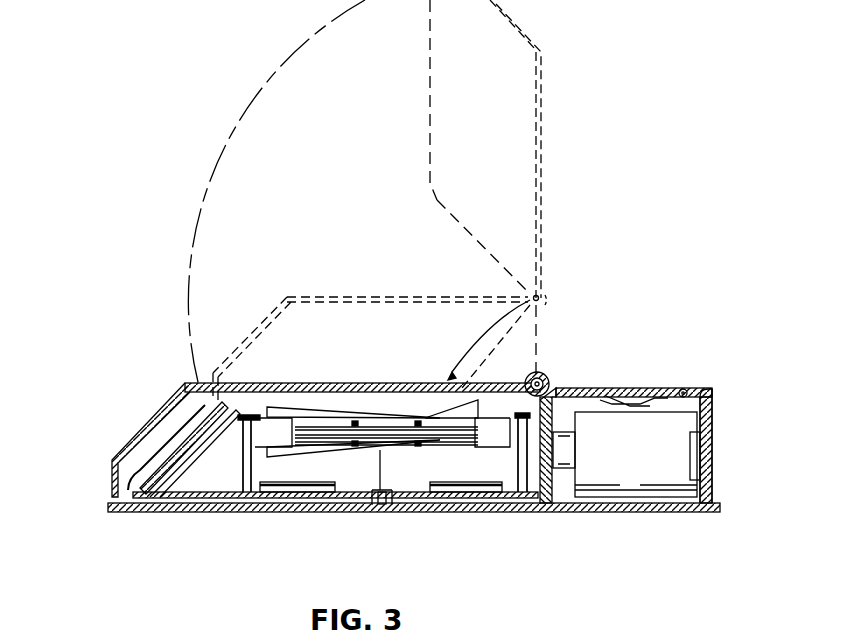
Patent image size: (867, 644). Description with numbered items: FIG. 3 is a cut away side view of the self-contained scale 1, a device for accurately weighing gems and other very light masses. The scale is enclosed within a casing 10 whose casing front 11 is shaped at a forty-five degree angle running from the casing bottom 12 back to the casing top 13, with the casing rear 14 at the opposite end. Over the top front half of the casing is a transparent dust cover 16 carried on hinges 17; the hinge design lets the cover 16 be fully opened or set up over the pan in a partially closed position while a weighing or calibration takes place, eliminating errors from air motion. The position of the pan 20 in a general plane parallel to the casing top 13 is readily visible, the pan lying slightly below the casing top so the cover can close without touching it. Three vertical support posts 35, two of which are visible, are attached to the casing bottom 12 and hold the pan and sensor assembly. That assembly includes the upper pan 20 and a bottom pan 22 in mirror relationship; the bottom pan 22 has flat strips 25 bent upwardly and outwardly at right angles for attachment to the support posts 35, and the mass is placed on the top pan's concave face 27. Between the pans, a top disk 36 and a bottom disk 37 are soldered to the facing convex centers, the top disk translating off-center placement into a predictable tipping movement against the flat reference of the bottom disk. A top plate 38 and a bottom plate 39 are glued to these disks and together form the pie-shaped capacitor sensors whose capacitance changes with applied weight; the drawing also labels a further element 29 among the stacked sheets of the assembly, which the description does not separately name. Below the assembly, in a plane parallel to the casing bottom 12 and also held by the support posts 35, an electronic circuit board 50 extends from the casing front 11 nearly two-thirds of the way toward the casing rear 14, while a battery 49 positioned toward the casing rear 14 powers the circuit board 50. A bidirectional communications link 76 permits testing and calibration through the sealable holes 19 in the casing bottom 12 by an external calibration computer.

The self-contained scale 1 is at (658, 182).
The casing 10 is at (712, 392).
The casing front 11 is at (66, 453).
The casing bottom 12 is at (519, 526).
The casing top 13 is at (626, 392).
The casing rear 14 is at (714, 455).
The dust cover 16 is at (542, 160).
The hinges 17 is at (546, 300).
The sealable holes 19 is at (388, 508).
The pan 20 is at (305, 408).
The bottom pan 22 is at (318, 448).
The strips 25 is at (382, 432).
The concave face 27 is at (388, 418).
The lower sheet 29 is at (392, 447).
The support posts 35 is at (243, 456).
The top disk 36 is at (356, 421).
The bottom disk 37 is at (368, 447).
The top plate 38 is at (462, 425).
The bottom plate 39 is at (288, 448).
The battery 49 is at (648, 460).
The electronic circuit board 50 is at (178, 494).
The bidirectional communications link 76 is at (380, 506).